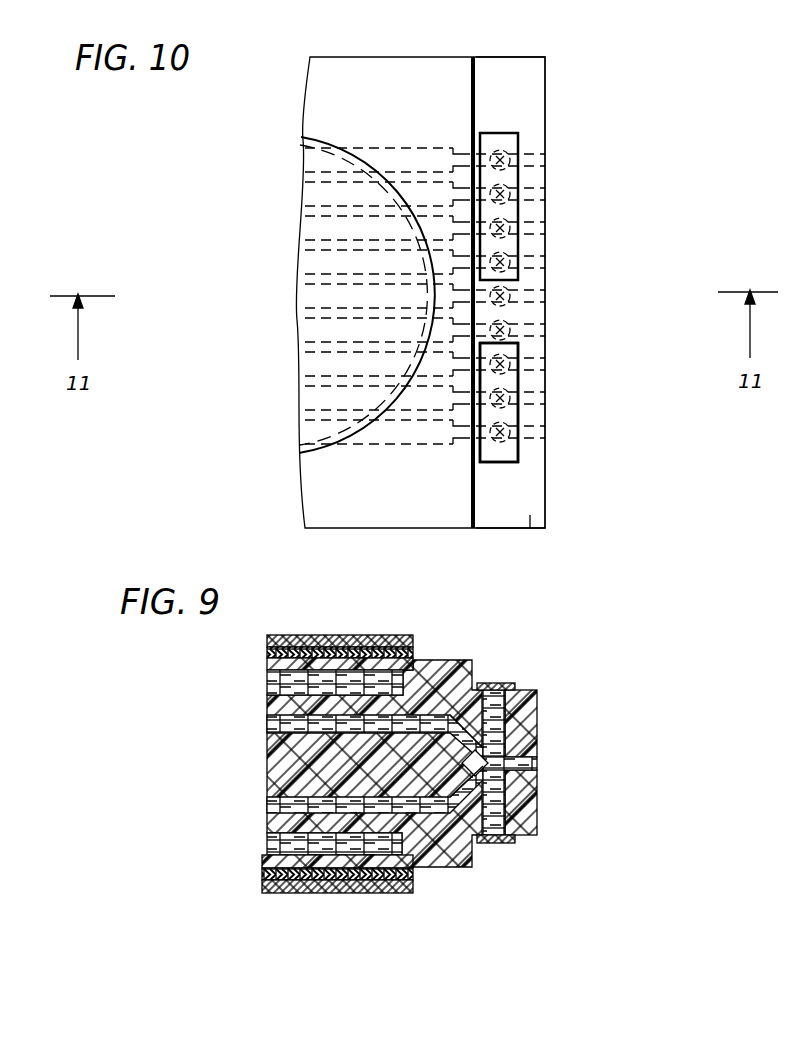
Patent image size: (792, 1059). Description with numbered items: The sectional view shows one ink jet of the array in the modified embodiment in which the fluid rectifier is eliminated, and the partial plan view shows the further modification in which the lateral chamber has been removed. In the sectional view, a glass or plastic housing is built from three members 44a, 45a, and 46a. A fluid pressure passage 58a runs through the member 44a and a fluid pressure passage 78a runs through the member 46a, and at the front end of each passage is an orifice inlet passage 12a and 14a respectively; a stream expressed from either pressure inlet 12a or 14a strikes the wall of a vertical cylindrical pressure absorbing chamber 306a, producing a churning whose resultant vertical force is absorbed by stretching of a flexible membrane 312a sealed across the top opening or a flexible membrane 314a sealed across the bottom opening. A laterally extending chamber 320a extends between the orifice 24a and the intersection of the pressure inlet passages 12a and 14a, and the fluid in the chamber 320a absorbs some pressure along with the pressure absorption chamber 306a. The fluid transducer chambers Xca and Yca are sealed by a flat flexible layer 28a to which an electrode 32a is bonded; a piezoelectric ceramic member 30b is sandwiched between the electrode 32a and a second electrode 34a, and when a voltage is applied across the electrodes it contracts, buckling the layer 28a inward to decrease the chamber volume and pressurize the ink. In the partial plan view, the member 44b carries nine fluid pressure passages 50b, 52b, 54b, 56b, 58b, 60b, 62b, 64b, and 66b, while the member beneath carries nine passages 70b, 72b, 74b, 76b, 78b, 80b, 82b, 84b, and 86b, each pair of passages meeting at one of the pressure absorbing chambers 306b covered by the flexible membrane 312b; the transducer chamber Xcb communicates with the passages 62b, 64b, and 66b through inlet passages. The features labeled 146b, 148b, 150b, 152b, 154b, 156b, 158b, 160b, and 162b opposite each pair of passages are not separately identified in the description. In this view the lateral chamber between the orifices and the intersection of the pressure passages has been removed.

In FIG. 10, the fluid pressure passage 50b is at (304, 160).
In FIG. 10, the fluid pressure passage 70b is at (357, 160).
In FIG. 10, the fluid pressure passage 52b is at (304, 194).
In FIG. 10, the fluid pressure passage 72b is at (357, 194).
In FIG. 10, the fluid pressure passage 54b is at (304, 228).
In FIG. 10, the fluid pressure passage 74b is at (357, 228).
In FIG. 10, the fluid pressure passage 56b is at (304, 262).
In FIG. 10, the fluid pressure passage 76b is at (357, 262).
In FIG. 10, the fluid pressure passage 58b is at (304, 296).
In FIG. 10, the fluid pressure passage 78b is at (357, 296).
In FIG. 10, the fluid pressure passage 60b is at (304, 330).
In FIG. 10, the fluid pressure passage 80b is at (357, 330).
In FIG. 10, the fluid pressure passage 62b is at (304, 364).
In FIG. 10, the fluid pressure passage 82b is at (357, 364).
In FIG. 10, the fluid pressure passage 64b is at (304, 398).
In FIG. 10, the fluid pressure passage 84b is at (357, 398).
In FIG. 10, the fluid pressure passage 66b is at (304, 432).
In FIG. 10, the fluid pressure passage 86b is at (357, 432).
In FIG. 10, the outlet passage 146b is at (548, 160).
In FIG. 10, the outlet passage 148b is at (548, 194).
In FIG. 10, the outlet passage 150b is at (548, 228).
In FIG. 10, the outlet passage 152b is at (548, 262).
In FIG. 10, the outlet passage 154b is at (548, 296).
In FIG. 10, the outlet passage 156b is at (548, 330).
In FIG. 10, the outlet passage 158b is at (548, 364).
In FIG. 10, the outlet passage 160b is at (548, 398).
In FIG. 10, the outlet passage 162b is at (548, 432).
In FIG. 10, the pressure absorbing chamber 306b is at (548, 177).
In FIG. 10, the flexible membrane 312b is at (518, 462).
In FIG. 10, the housing member 44b is at (530, 528).
In FIG. 10, the fluid transducer chamber Xcb is at (345, 148).
In FIG. 9, the electrode 34a is at (267, 640).
In FIG. 9, the piezoelectric ceramic member 30b is at (267, 652).
In FIG. 9, the electrode 32a is at (267, 664).
In FIG. 9, the flat flexible layer 28a is at (267, 676).
In FIG. 9, the fluid pressure passage 58a is at (267, 722).
In FIG. 9, the housing member 45a is at (267, 752).
In FIG. 9, the fluid pressure passage 78a is at (267, 800).
In FIG. 9, the fluid transducer chamber Yca is at (267, 846).
In FIG. 9, the fluid transducer chamber Xca is at (342, 683).
In FIG. 9, the orifice inlet passage 12a is at (458, 738).
In FIG. 9, the orifice inlet passage 14a is at (462, 760).
In FIG. 9, the flexible membrane 312a is at (495, 683).
In FIG. 9, the pressure absorbing chamber 306a is at (500, 703).
In FIG. 9, the housing member 44a is at (530, 720).
In FIG. 9, the laterally extending chamber 320a is at (500, 748).
In FIG. 9, the orifice 24a is at (537, 763).
In FIG. 9, the housing member 46a is at (530, 830).
In FIG. 9, the flexible membrane 314a is at (495, 843).